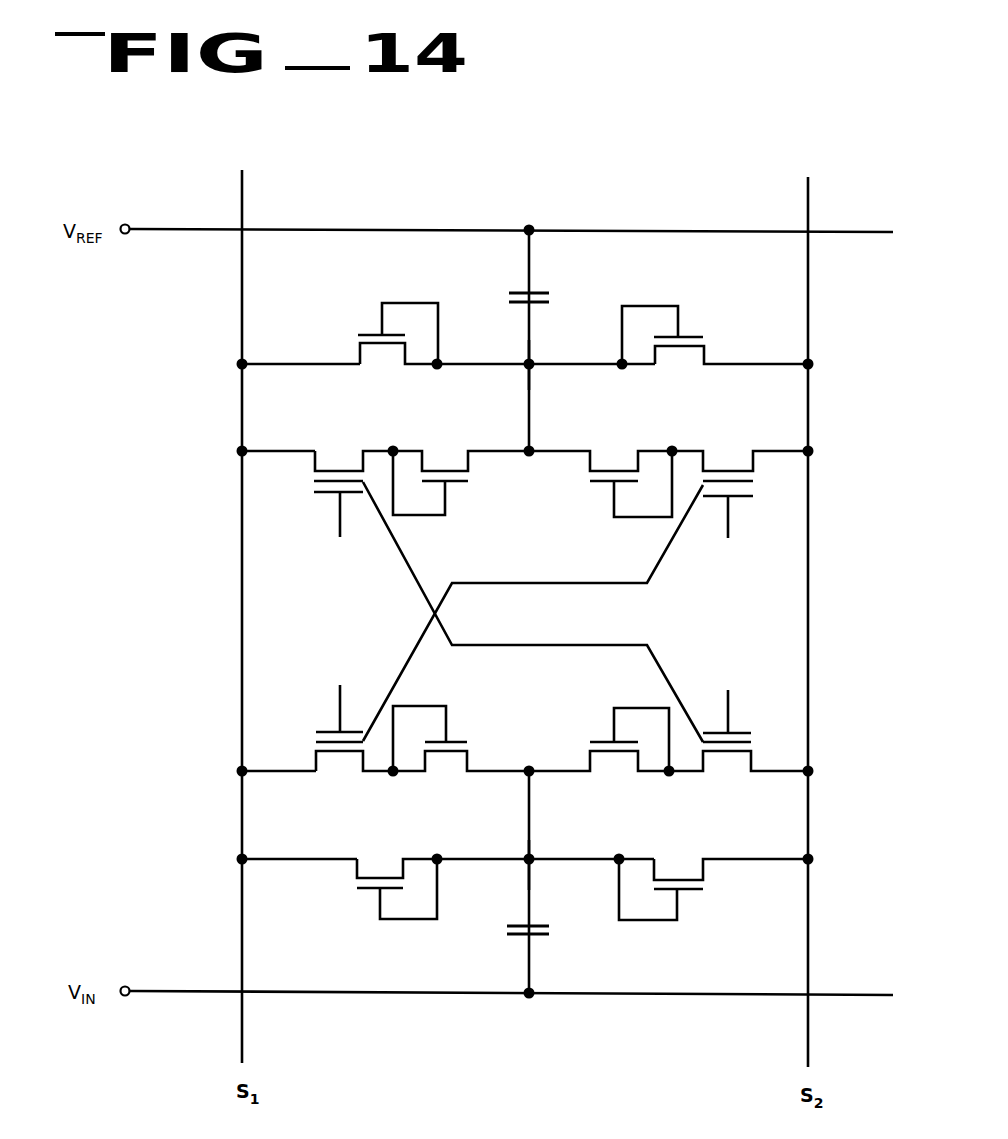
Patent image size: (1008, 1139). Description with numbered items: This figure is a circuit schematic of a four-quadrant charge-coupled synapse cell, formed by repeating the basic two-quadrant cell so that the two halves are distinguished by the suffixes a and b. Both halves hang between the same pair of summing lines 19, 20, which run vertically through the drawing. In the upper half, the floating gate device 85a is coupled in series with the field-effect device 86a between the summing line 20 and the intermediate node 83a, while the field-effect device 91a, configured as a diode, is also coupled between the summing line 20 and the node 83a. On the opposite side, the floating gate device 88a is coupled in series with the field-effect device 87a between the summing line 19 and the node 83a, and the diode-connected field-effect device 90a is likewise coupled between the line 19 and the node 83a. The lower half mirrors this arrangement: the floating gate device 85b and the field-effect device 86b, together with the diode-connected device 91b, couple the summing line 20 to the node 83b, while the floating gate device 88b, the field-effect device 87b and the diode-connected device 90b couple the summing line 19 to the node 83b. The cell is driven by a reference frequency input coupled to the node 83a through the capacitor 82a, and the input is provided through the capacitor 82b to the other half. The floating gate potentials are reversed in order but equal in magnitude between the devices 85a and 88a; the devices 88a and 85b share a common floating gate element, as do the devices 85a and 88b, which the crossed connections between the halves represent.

The summing line 19 is at (238, 551).
The summing line 20 is at (811, 570).
The capacitor 82a is at (551, 299).
The capacitor 82b is at (552, 932).
The intermediate node 83a is at (533, 367).
The intermediate node 83b is at (533, 866).
The floating gate device 85a is at (730, 466).
The floating gate device 85b is at (735, 760).
The field-effect device 86a is at (616, 464).
The field-effect device 86b is at (614, 760).
The field-effect device 87a is at (453, 462).
The field-effect device 87b is at (449, 760).
The floating gate device 88a is at (341, 462).
The floating gate device 88b is at (339, 760).
The field-effect device 90a is at (383, 350).
The field-effect device 90b is at (382, 870).
The field-effect device 91a is at (684, 350).
The field-effect device 91b is at (678, 870).